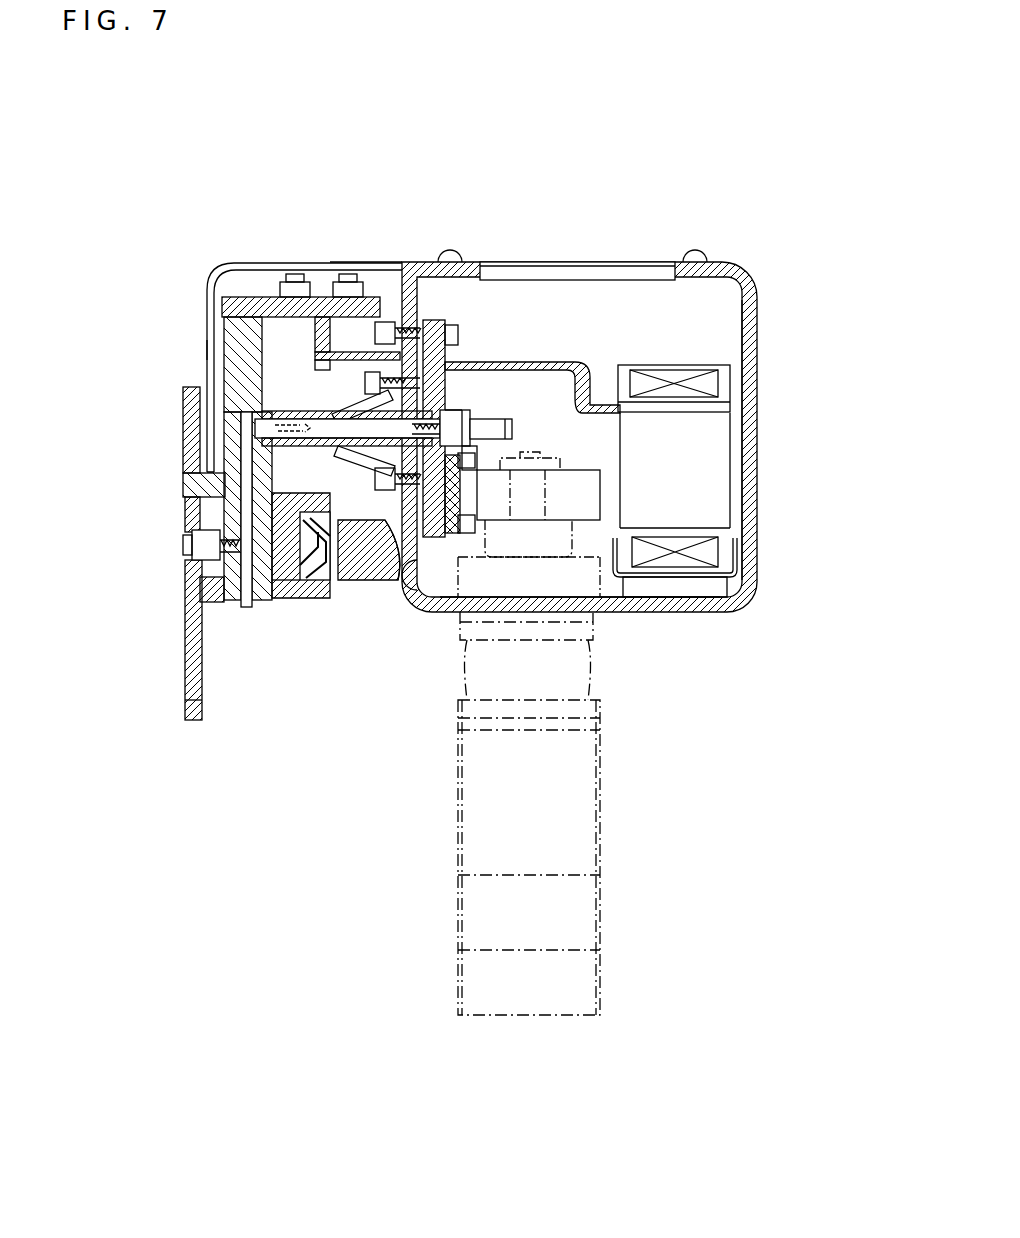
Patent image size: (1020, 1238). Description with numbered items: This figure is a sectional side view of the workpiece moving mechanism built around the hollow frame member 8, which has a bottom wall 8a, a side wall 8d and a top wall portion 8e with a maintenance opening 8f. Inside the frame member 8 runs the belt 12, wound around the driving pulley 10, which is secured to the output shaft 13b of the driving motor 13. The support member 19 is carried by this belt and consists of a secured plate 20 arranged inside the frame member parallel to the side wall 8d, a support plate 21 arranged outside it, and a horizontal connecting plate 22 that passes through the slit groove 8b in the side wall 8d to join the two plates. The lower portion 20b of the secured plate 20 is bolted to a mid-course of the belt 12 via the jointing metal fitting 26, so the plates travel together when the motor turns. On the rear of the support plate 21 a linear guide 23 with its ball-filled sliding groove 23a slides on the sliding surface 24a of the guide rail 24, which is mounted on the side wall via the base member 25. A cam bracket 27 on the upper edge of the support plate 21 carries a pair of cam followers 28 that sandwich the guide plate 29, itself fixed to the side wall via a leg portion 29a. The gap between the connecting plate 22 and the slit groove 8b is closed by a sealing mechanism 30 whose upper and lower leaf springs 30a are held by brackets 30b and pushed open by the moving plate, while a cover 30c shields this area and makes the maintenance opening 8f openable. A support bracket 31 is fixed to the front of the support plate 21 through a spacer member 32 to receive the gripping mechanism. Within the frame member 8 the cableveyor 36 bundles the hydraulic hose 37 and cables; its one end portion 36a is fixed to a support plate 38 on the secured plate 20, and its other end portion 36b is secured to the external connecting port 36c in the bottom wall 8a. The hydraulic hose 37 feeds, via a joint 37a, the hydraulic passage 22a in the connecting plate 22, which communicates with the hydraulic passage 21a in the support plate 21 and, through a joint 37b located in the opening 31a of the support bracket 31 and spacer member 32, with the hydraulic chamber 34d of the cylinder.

The frame member 8 is at (762, 297).
The bottom wall 8a is at (618, 612).
The slit groove 8b is at (446, 384).
The side wall 8d is at (418, 298).
The top wall portion 8e is at (683, 263).
The maintenance opening 8f is at (484, 270).
The driving pulley 10 is at (622, 453).
The belt 12 is at (602, 490).
The driving motor 13 is at (600, 793).
The output shaft 13b is at (557, 470).
The support member 19 is at (195, 350).
The secured plate 20 is at (447, 372).
The lower portion 20b is at (397, 585).
The support plate 21 is at (209, 365).
The hydraulic passage 21a is at (183, 487).
The connecting plate 22 is at (312, 410).
The hydraulic passage 22a is at (480, 450).
The linear guide 23 is at (313, 582).
The sliding groove 23a is at (293, 588).
The guide rail 24 is at (352, 585).
The sliding surface 24a is at (287, 495).
The base member 25 is at (378, 590).
The jointing metal fitting 26 is at (452, 535).
The cam bracket 27 is at (258, 298).
The cam followers 28 is at (335, 298).
The guide plate 29 is at (314, 351).
The leg portion 29a is at (338, 332).
The sealing mechanism 30 is at (290, 410).
The leaf springs 30a is at (356, 401).
The brackets 30b is at (408, 264).
The cover 30c is at (330, 262).
The support bracket 31 is at (181, 445).
The opening 31a is at (190, 573).
The spacer member 32 is at (213, 605).
The hydraulic chamber 34d is at (168, 547).
The cableveyor 36 is at (674, 360).
The one end portion 36a is at (720, 380).
The other end portion 36b is at (720, 553).
The external connecting port 36c is at (738, 585).
The hydraulic hose 37 is at (510, 421).
The joint 37a is at (463, 412).
The joint 37b is at (200, 535).
The support plate 38 is at (530, 362).